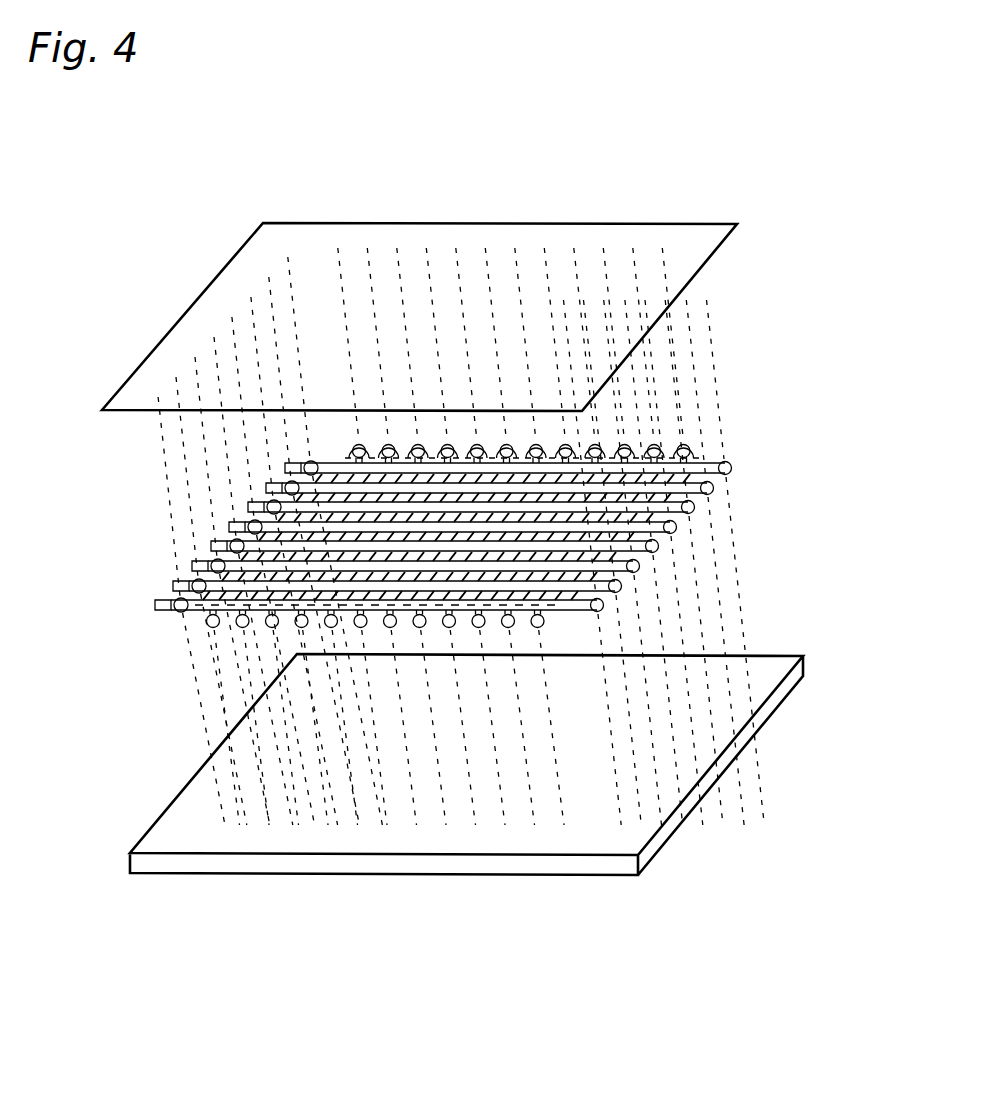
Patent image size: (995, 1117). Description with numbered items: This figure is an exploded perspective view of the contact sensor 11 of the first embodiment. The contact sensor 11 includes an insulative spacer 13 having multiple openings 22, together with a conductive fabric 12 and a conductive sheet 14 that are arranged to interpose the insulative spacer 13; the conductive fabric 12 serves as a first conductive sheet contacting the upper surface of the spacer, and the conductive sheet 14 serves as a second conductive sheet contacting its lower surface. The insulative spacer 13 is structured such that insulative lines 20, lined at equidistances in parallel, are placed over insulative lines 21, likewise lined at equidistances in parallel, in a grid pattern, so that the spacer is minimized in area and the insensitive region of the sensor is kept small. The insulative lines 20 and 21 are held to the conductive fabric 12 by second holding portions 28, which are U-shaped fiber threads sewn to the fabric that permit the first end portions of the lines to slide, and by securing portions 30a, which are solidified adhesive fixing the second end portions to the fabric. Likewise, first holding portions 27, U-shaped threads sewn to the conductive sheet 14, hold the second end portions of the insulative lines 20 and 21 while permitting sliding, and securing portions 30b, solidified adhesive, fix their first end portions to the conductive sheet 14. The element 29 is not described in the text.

The contact sensor 11 is at (229, 156).
The conductive fabric 12 is at (700, 222).
The insulative spacer 13 is at (198, 617).
The conductive sheet 14 is at (772, 721).
The insulative lines 20 is at (210, 548).
The insulative lines 21 is at (528, 462).
The openings 22 is at (680, 513).
The first holding portions 27 is at (175, 588).
The second holding portions 28 is at (727, 462).
The connecting line 29 is at (344, 455).
The securing portions 30a is at (283, 492).
The securing portions 30b is at (244, 630).